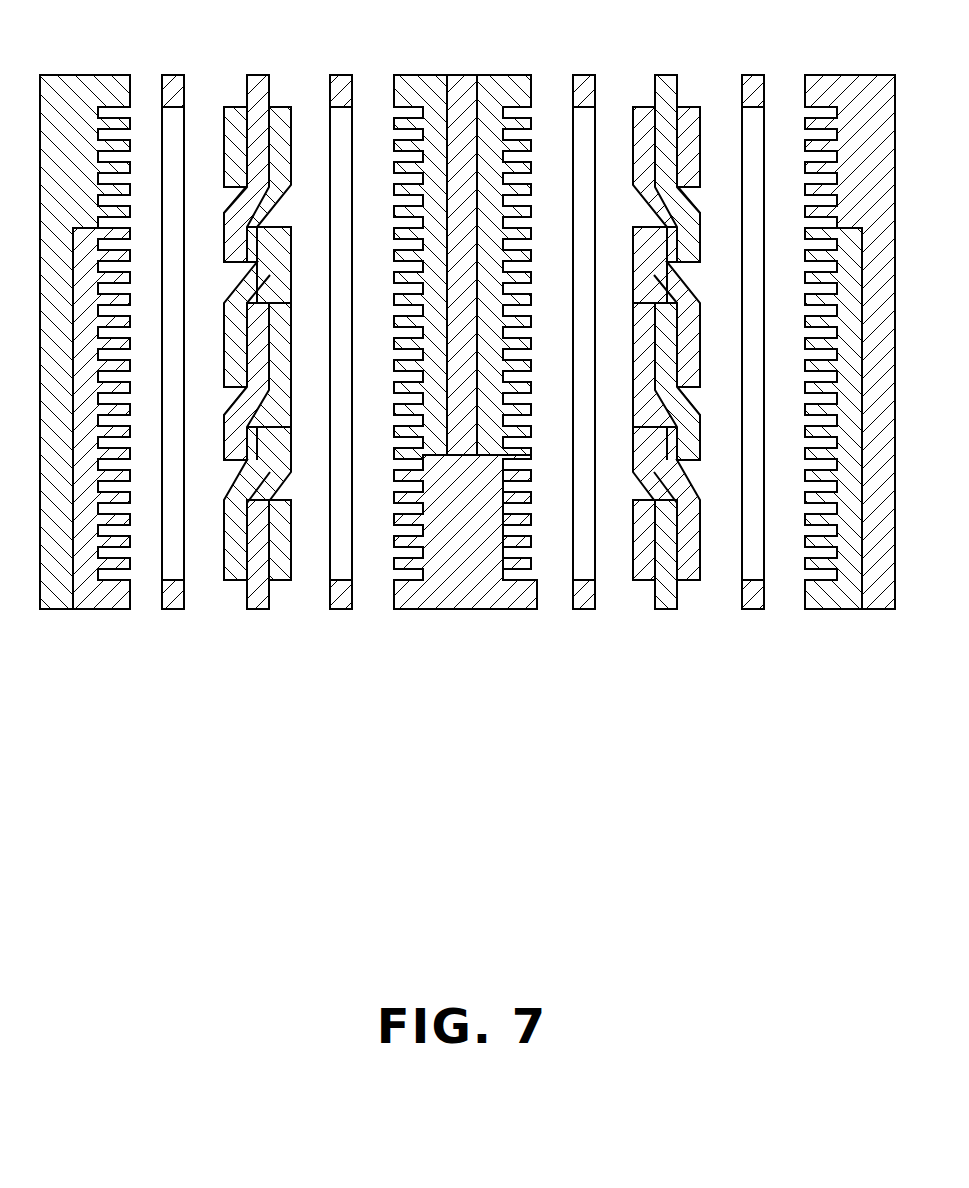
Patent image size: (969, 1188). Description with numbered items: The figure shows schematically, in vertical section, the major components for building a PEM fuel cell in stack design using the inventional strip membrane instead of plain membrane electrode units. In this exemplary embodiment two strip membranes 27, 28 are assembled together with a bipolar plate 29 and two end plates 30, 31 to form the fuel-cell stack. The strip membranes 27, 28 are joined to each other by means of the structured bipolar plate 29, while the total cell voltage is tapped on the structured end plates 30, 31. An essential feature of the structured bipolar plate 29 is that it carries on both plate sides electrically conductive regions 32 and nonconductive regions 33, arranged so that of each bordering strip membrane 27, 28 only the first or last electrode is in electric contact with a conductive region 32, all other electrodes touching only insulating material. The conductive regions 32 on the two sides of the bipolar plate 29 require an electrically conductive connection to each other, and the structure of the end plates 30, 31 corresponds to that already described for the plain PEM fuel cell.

The strip membrane 27 is at (632, 695).
The strip membrane 28 is at (225, 695).
The bipolar plate 29 is at (467, 380).
The end plate 30 is at (127, 695).
The end plate 31 is at (892, 695).
The conductive region 32 is at (528, 695).
The nonconductive region 33 is at (423, 85).